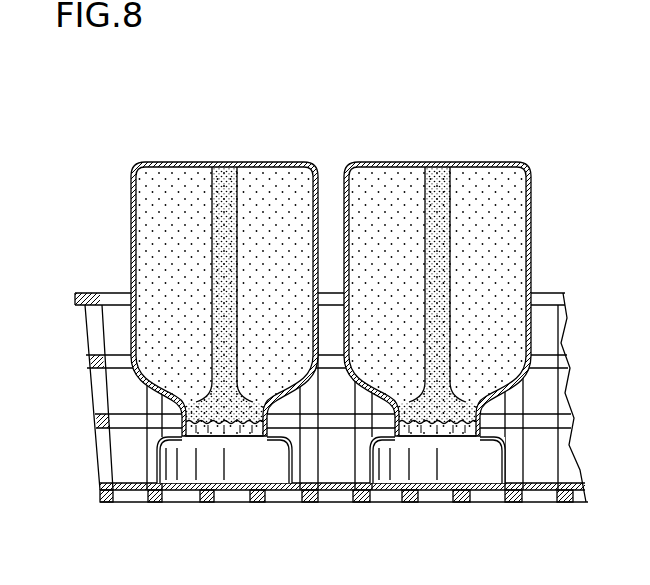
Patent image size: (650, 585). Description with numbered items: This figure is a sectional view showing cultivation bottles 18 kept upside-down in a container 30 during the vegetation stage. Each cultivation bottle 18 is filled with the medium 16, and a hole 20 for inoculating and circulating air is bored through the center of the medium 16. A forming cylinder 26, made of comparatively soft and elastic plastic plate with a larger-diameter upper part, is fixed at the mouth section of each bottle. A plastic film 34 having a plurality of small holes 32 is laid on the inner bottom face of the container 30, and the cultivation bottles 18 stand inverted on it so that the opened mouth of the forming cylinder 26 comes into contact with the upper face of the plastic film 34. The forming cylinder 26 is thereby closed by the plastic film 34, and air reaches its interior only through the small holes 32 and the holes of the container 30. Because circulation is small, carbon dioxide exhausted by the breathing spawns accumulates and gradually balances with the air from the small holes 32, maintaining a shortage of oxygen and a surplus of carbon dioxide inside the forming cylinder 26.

The medium 16 is at (280, 180).
The cultivation bottle 18 is at (158, 162).
The hole 20 is at (228, 166).
The forming cylinder 26 is at (292, 467).
The container 30 is at (75, 298).
The small holes 32 is at (177, 502).
The plastic film 34 is at (123, 480).